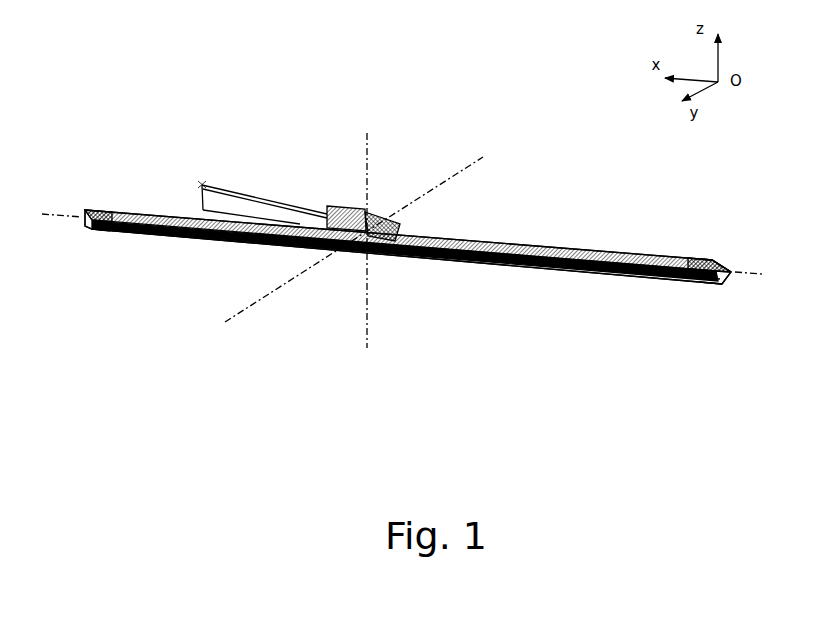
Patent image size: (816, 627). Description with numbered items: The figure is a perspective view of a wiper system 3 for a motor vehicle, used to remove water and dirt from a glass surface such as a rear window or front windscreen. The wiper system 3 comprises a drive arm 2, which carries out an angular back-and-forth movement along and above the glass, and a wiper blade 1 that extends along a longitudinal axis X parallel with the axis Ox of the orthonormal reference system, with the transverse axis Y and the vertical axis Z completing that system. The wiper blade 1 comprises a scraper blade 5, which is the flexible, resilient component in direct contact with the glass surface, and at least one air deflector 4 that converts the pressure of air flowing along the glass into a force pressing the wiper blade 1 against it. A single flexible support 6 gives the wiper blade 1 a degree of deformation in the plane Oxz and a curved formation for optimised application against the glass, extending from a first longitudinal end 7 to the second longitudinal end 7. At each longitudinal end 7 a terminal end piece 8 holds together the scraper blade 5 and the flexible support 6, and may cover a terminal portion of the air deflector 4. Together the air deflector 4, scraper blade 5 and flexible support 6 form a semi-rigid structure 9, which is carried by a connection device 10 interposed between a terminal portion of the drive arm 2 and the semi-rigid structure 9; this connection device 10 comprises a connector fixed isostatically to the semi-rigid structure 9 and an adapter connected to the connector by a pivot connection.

The wiper blade 1 is at (553, 178).
The drive arm 2 is at (258, 193).
The wiper system 3 is at (297, 82).
The air deflector 4 is at (183, 217).
The scraper blade 5 is at (205, 237).
The flexible support 6 is at (472, 282).
The longitudinal end 7 is at (98, 235).
The terminal end piece 8 is at (110, 216).
The semi-rigid structure 9 is at (582, 313).
The connection device 10 is at (342, 207).